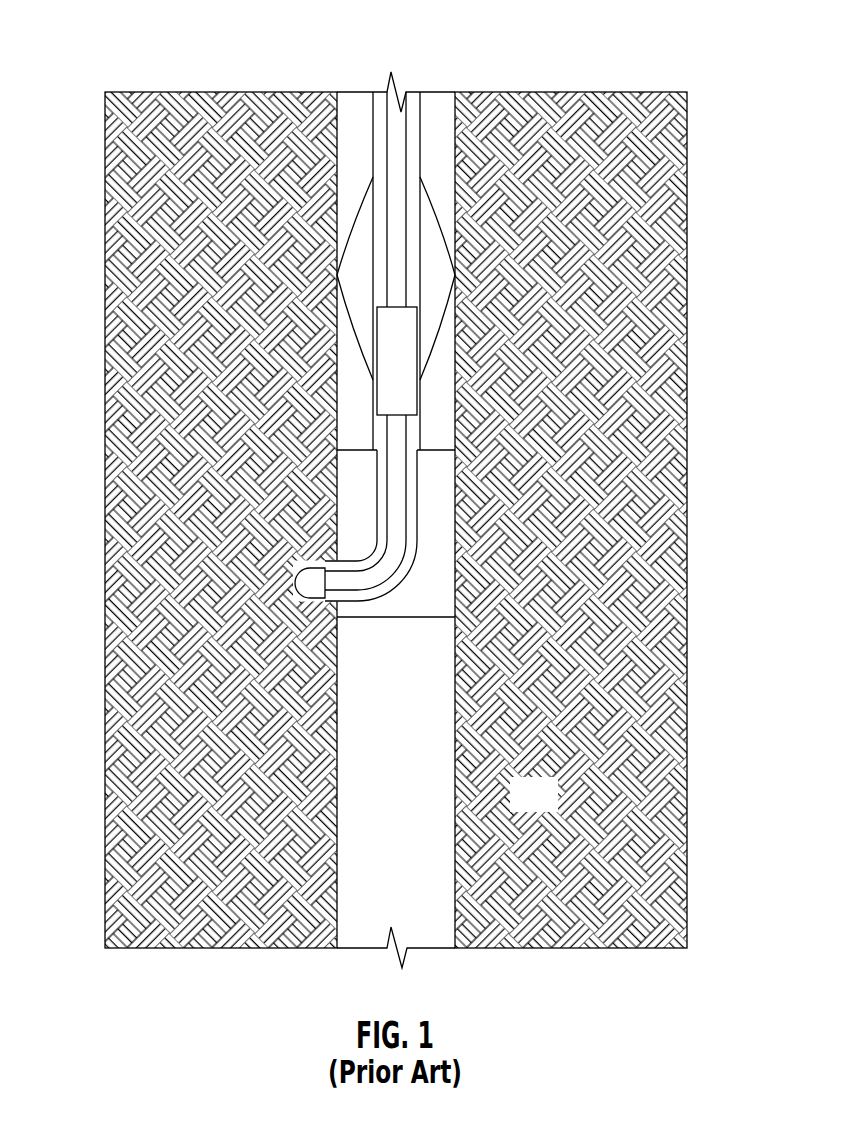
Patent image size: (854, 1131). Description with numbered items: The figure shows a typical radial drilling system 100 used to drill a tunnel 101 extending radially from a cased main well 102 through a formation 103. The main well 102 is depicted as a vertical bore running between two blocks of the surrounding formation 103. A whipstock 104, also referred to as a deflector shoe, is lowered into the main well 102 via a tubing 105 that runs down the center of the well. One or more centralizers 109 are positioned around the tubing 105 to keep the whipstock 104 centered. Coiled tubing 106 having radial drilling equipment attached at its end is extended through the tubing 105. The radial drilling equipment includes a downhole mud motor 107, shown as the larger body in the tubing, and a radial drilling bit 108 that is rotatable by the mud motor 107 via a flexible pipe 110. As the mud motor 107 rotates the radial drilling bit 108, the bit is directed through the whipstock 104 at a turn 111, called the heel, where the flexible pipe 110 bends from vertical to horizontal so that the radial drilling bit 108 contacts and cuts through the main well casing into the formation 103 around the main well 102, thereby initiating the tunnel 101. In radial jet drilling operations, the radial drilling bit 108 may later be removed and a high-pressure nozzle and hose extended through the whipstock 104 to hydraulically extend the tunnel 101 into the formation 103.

The radial drilling system 100 is at (128, 30).
The tunnel 101 is at (302, 567).
The main well 102 is at (462, 748).
The formation 103 is at (513, 808).
The whipstock 104 is at (440, 505).
The tubing 105 is at (425, 273).
The coiled tubing 106 is at (395, 158).
The downhole mud motor 107 is at (400, 362).
The radial drilling bit 108 is at (310, 585).
The centralizers 109 is at (430, 190).
The flexible pipe 110 is at (395, 488).
The turn 111 is at (407, 567).